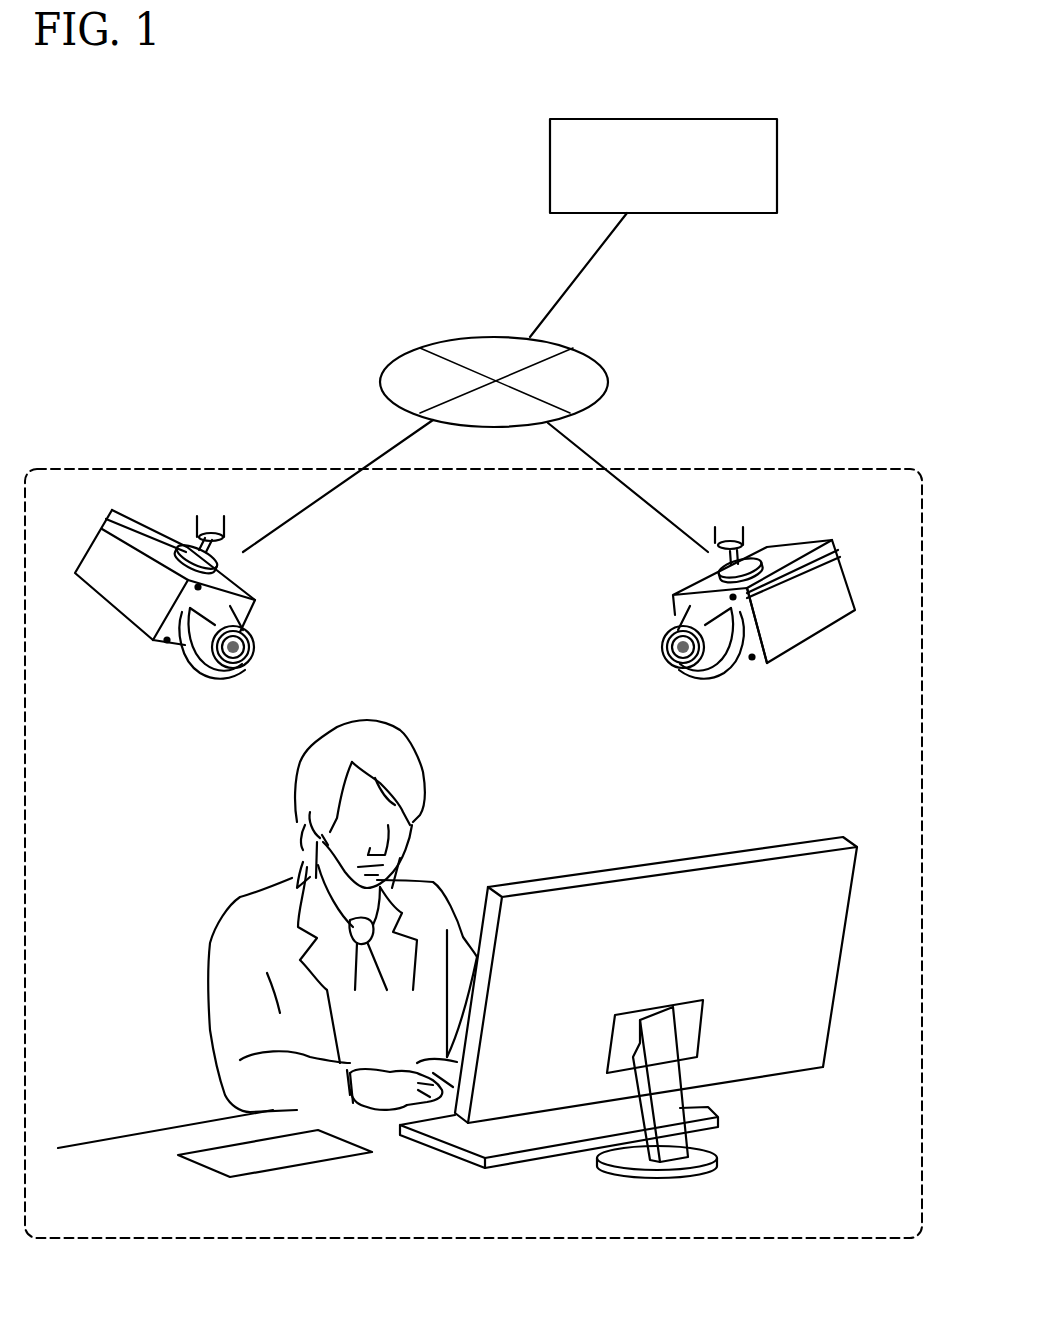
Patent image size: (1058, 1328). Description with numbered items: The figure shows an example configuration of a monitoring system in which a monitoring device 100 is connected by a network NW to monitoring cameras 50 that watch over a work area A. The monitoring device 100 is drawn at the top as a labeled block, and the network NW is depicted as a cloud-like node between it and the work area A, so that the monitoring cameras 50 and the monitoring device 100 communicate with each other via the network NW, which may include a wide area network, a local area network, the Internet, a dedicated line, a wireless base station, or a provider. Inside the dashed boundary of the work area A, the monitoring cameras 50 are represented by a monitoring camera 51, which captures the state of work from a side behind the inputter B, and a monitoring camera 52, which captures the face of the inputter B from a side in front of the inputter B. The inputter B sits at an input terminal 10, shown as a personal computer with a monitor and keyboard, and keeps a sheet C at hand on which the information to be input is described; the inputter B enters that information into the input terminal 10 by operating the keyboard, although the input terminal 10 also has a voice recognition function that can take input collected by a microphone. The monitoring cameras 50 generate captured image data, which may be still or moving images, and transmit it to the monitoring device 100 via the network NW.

The monitoring device 100 is at (713, 118).
The network NW is at (474, 337).
The work area A is at (755, 466).
The monitoring cameras 50 is at (661, 604).
The monitoring camera 51 is at (108, 625).
The monitoring camera 52 is at (807, 541).
The inputter B is at (317, 757).
The sheet C is at (233, 1153).
The input terminal 10 is at (757, 852).